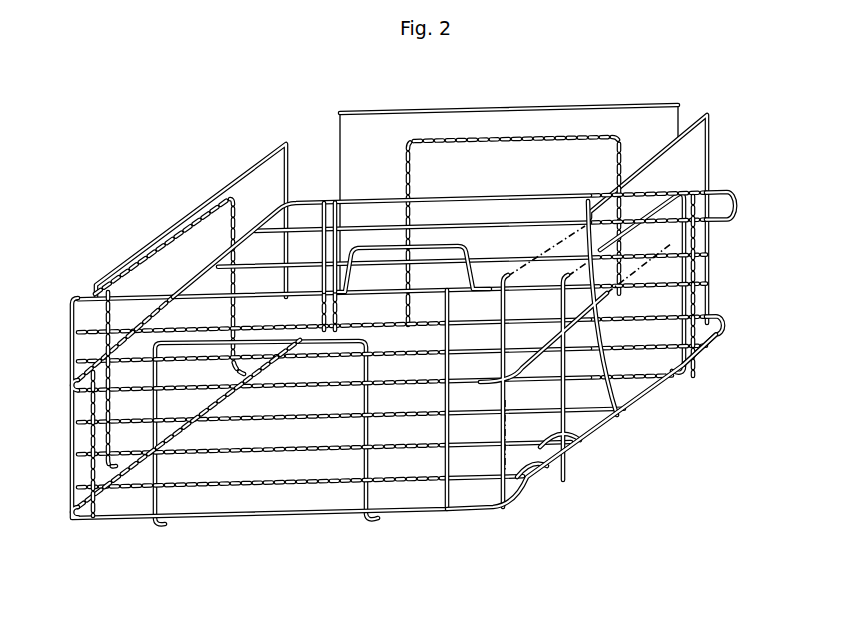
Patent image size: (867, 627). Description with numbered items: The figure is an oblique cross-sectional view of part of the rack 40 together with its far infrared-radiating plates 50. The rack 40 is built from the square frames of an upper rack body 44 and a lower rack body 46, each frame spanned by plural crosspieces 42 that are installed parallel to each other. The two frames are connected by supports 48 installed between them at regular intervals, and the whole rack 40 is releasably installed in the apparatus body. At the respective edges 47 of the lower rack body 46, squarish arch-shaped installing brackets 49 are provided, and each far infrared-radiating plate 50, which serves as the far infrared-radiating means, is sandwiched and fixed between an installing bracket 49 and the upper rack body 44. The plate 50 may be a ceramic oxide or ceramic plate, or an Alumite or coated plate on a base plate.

The rack 40 is at (309, 197).
The crosspieces 42 is at (515, 258).
The upper rack body 44 is at (380, 200).
The lower rack body 46 is at (473, 512).
The edges 47 is at (137, 453).
The supports 48 is at (335, 258).
The installing bracket 49 is at (458, 136).
The far infrared-radiating plate 50 is at (660, 160).